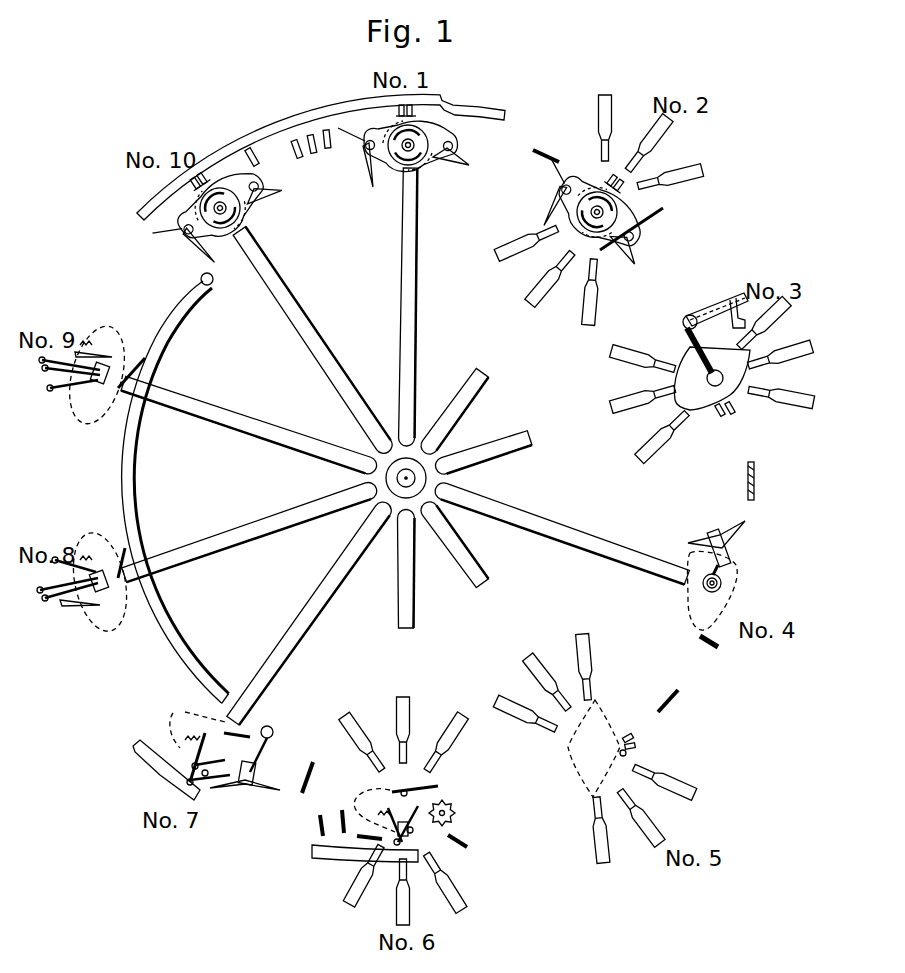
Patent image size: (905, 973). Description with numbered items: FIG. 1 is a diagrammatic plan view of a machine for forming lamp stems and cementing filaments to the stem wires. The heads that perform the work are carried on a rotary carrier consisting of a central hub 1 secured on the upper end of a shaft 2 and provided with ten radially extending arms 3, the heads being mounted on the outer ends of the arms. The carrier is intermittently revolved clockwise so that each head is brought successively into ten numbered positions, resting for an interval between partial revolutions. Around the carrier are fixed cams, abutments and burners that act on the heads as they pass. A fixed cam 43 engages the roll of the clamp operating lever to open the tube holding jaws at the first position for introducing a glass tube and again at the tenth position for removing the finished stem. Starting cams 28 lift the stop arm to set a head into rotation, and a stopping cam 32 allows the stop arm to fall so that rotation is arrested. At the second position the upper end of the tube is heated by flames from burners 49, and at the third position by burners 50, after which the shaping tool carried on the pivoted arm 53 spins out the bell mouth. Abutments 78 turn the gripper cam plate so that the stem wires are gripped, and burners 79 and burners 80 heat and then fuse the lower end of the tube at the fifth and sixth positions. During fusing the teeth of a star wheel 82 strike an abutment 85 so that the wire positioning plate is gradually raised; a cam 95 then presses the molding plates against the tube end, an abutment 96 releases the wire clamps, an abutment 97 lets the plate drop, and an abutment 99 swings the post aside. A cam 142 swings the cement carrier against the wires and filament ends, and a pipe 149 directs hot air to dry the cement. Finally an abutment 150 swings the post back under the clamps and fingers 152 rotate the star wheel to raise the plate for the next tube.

The central hub 1 is at (422, 457).
The shaft 2 is at (426, 479).
The radially extending arms 3 is at (412, 287).
The fixed cam 43 is at (208, 168).
The pipe 149 is at (136, 462).
The abutment 150 is at (296, 160).
The fingers 152 is at (328, 152).
The starting cam 28 is at (538, 156).
The burners 49 is at (680, 187).
The arm 53 is at (690, 340).
The burners 50 is at (672, 436).
The stopping cam 32 is at (746, 487).
The fixed cams or abutments 78 is at (708, 646).
The burners 79 is at (592, 830).
The abutment 99 is at (315, 765).
The abutment 97 is at (322, 815).
The abutment 96 is at (344, 808).
The star wheel 82 is at (452, 805).
The abutment 85 is at (468, 843).
The burners 80 is at (455, 884).
The cam 95 is at (322, 856).
The cam 142 is at (148, 777).